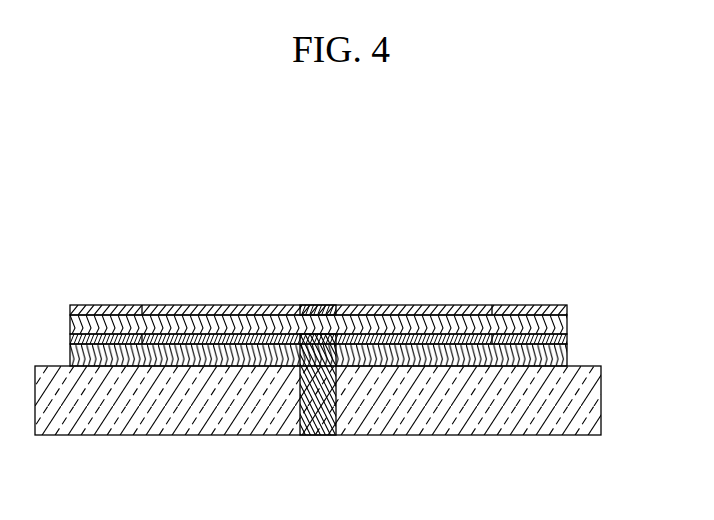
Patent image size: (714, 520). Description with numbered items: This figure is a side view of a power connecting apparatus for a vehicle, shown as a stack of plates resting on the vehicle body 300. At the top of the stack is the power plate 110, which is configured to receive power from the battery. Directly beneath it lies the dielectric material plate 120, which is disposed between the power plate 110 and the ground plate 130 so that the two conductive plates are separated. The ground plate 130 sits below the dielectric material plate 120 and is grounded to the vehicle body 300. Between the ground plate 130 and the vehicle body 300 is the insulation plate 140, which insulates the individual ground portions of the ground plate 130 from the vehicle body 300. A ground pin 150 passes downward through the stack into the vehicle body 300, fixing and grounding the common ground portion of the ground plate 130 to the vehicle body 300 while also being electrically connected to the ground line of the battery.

The power plate 110 is at (567, 307).
The dielectric material plate 120 is at (567, 319).
The ground plate 130 is at (567, 334).
The insulation plate 140 is at (567, 355).
The ground pin 150 is at (320, 422).
The vehicle body 300 is at (157, 422).